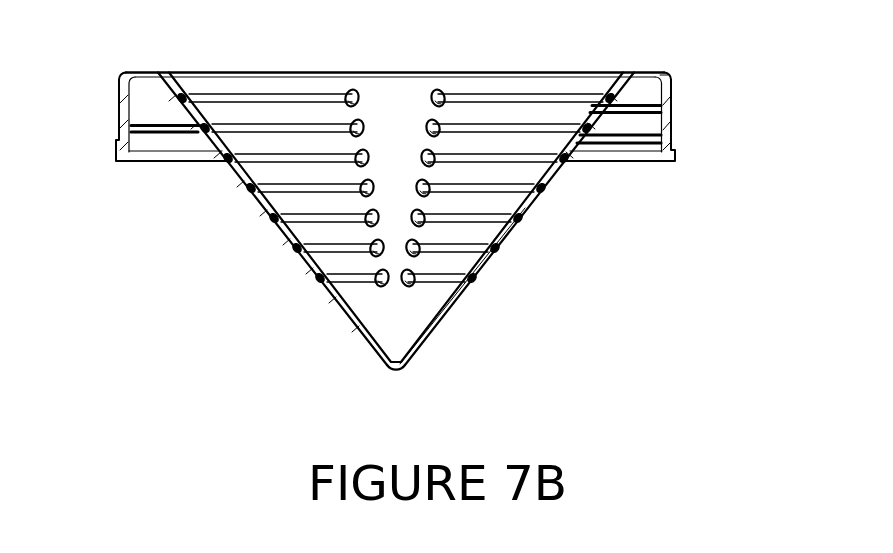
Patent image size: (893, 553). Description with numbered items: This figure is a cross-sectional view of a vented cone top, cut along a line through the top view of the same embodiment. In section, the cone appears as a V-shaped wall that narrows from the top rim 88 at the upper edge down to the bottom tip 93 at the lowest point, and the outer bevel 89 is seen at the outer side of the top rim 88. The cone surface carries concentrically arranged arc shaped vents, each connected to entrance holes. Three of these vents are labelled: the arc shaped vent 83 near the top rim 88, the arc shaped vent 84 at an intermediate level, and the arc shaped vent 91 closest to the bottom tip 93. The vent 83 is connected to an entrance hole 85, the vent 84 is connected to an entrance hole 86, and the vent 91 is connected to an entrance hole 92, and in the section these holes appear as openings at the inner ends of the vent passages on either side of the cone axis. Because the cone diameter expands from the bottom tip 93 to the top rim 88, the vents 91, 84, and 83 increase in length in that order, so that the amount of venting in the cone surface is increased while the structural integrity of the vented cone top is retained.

The arc shaped vent 83 is at (250, 72).
The arc shaped vent 84 is at (280, 137).
The entrance hole 85 is at (344, 88).
The entrance hole 86 is at (367, 122).
The top rim 88 is at (636, 73).
The outer bevel 89 is at (672, 72).
The arc shaped vent 91 is at (362, 286).
The entrance hole 92 is at (383, 296).
The bottom tip 93 is at (394, 372).